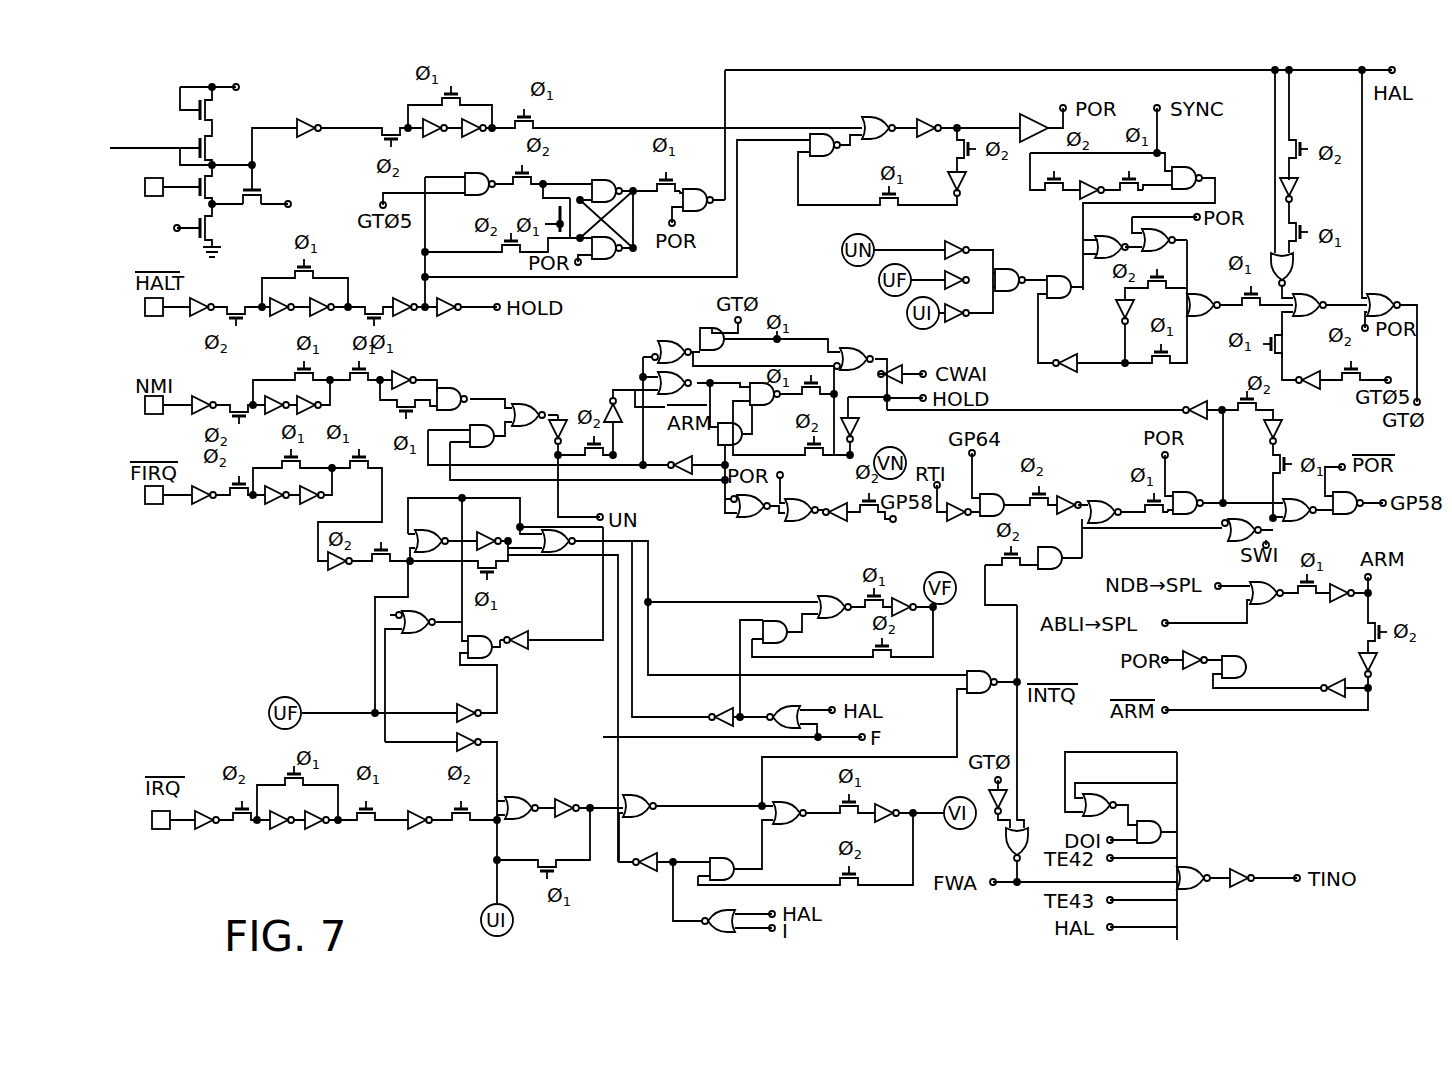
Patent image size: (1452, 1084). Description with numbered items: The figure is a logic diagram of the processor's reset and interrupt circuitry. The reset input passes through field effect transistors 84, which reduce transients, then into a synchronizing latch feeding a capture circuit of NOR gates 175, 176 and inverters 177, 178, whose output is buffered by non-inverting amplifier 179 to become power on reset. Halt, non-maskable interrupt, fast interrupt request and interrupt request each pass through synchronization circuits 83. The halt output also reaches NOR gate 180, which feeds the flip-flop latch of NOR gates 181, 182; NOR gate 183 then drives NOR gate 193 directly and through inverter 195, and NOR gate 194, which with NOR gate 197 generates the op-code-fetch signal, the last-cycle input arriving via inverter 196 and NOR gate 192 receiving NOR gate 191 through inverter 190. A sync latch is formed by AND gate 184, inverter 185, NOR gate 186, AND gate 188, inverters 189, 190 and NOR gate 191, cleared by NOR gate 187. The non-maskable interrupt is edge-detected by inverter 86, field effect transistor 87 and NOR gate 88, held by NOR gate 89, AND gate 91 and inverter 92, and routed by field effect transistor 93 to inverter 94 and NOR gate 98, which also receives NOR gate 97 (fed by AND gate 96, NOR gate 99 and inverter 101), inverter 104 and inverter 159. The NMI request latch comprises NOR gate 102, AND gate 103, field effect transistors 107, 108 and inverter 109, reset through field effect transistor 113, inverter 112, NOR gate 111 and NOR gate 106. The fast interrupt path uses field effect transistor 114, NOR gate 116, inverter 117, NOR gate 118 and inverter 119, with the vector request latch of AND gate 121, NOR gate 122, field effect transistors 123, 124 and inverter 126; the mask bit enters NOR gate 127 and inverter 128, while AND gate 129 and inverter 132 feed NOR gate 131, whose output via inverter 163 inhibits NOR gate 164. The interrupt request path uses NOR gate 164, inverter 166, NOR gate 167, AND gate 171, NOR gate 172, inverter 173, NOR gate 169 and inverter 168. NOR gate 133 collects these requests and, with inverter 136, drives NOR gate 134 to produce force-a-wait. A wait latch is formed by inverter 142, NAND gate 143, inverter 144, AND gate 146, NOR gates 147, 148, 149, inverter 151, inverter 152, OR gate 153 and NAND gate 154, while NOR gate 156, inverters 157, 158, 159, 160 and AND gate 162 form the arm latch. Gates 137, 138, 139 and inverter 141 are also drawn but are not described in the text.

The synchronization circuit 83 is at (291, 836).
The field effect transistors 84 is at (176, 126).
The inverter 86 is at (411, 368).
The field effect transistor 87 is at (391, 419).
The NOR gate 88 is at (456, 386).
The NOR gate 89 is at (528, 403).
The AND gate 91 is at (486, 424).
The inverter 92 is at (563, 414).
The field effect transistor 93 is at (558, 458).
The inverter 94 is at (608, 402).
The AND gate 96 is at (698, 322).
The NOR gate 97 is at (663, 344).
The NOR gate 98 is at (660, 372).
The NOR gate 99 is at (848, 358).
The inverter 101 is at (897, 358).
The NOR gate 102 is at (769, 409).
The AND gate 103 is at (718, 441).
The inverter 104 is at (685, 485).
The NOR gate 106 is at (750, 523).
The field effect transistor 107 is at (810, 381).
The field effect transistor 108 is at (812, 462).
The inverter 109 is at (854, 432).
The NOR gate 111 is at (801, 525).
The inverter 112 is at (842, 527).
The field effect transistor 113 is at (879, 522).
The field effect transistor 114 is at (364, 572).
The NOR gate 116 is at (435, 527).
The inverter 117 is at (489, 526).
The NOR gate 118 is at (562, 554).
The inverter 119 is at (718, 710).
The AND gate 121 is at (783, 645).
The NOR gate 122 is at (830, 596).
The field effect transistor 123 is at (897, 598).
The field effect transistor 124 is at (866, 654).
The inverter 126 is at (917, 632).
The NOR gate 127 is at (785, 708).
The inverter 128 is at (522, 646).
The AND gate 129 is at (474, 662).
The NOR gate 131 is at (420, 611).
The inverter 132 is at (458, 712).
The NOR gate 133 is at (988, 670).
The NOR gate 134 is at (1006, 845).
The inverter 136 is at (1008, 800).
The NOR gate 137 is at (1097, 792).
The AND gate 138 is at (1154, 813).
The NOR gate 139 is at (1195, 866).
The inverter 141 is at (1242, 868).
The inverter 142 is at (955, 527).
The NAND gate 143 is at (999, 490).
The inverter 144 is at (1076, 489).
The AND gate 146 is at (1055, 569).
The NOR gate 147 is at (1109, 498).
The NOR gate 148 is at (1194, 490).
The NOR gate 149 is at (1230, 544).
The inverter 151 is at (1282, 430).
The inverter 152 is at (1200, 402).
The OR gate 153 is at (1302, 526).
The NAND gate 154 is at (1353, 521).
The NOR gate 156 is at (1271, 606).
The inverter 157 is at (1340, 602).
The inverter 158 is at (1190, 657).
The inverter 159 is at (1375, 668).
The inverter 160 is at (1333, 679).
The AND gate 162 is at (1240, 680).
The inverter 163 is at (458, 741).
The NOR gate 164 is at (515, 796).
The inverter 166 is at (571, 790).
The NOR gate 167 is at (640, 794).
The inverter 168 is at (647, 871).
The NOR gate 169 is at (711, 932).
The AND gate 171 is at (718, 857).
The NOR gate 172 is at (788, 801).
The inverter 173 is at (880, 801).
The NOR gate 175 is at (825, 158).
The NOR gate 176 is at (875, 116).
The inverter 177 is at (925, 119).
The inverter 178 is at (966, 185).
The non-inverting amplifier 179 is at (1028, 116).
The NOR gate 180 is at (477, 170).
The NOR gate 181 is at (604, 173).
The NOR gate 182 is at (606, 260).
The NOR gate 183 is at (697, 178).
The AND gate 184 is at (1187, 167).
The inverter 185 is at (1082, 198).
The NOR gate 186 is at (1108, 233).
The NOR gate 187 is at (1005, 269).
The AND gate 188 is at (1052, 276).
The inverter 189 is at (1067, 353).
The inverter 190 is at (1116, 323).
The NOR gate 191 is at (1184, 243).
The NOR gate 192 is at (1206, 295).
The NOR gate 193 is at (1290, 263).
The NOR gate 194 is at (1306, 300).
The inverter 195 is at (1296, 190).
The inverter 196 is at (1313, 368).
The NOR gate 197 is at (1378, 298).